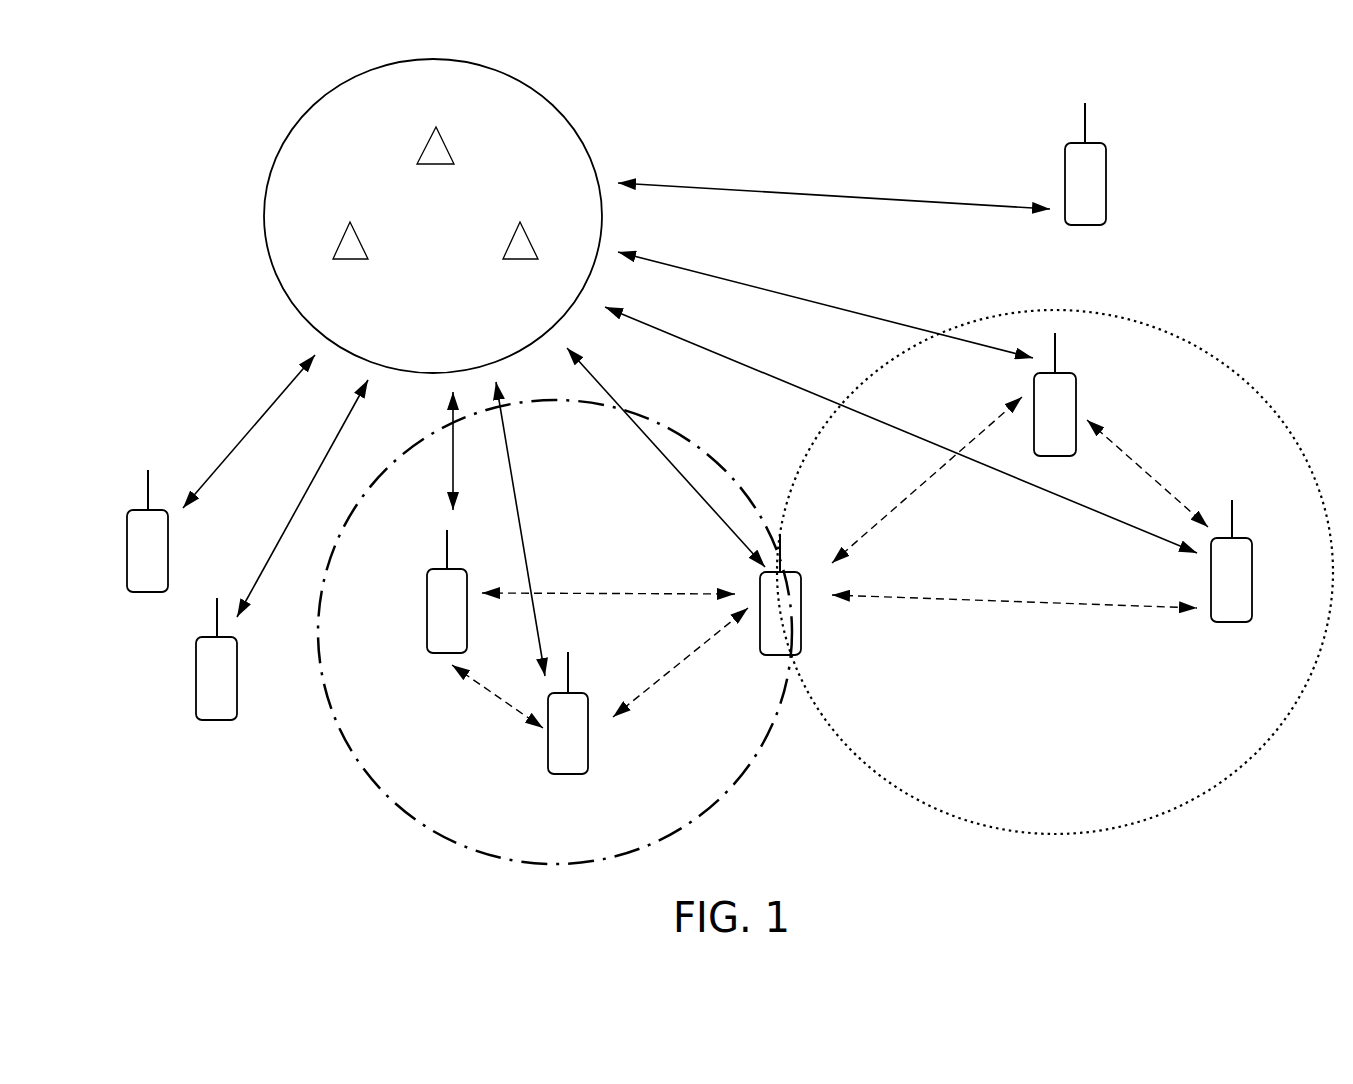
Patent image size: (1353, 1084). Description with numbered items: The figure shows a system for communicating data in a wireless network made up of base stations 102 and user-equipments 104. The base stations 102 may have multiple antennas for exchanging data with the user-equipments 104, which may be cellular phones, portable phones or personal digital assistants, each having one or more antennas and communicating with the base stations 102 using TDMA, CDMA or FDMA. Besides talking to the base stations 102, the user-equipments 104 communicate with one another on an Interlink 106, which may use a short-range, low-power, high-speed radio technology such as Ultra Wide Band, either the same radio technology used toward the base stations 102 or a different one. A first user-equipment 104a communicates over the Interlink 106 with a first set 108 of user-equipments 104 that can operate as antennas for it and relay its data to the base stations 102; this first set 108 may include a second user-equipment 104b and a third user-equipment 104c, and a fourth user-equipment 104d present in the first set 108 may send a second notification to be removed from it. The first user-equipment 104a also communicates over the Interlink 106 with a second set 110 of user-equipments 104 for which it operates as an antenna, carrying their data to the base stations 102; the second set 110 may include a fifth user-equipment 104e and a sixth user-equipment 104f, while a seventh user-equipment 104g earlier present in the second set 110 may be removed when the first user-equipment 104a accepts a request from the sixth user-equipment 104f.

The base station 102 is at (277, 273).
The user-equipment 104 is at (127, 560).
The first user-equipment 104a is at (802, 605).
The second user-equipment 104b is at (1222, 622).
The third user-equipment 104c is at (1077, 402).
The fourth user-equipment 104d is at (1065, 170).
The fifth user-equipment 104e is at (547, 758).
The sixth user-equipment 104f is at (425, 640).
The seventh user-equipment 104g is at (195, 707).
The Interlink 106 is at (593, 592).
The first set 108 is at (876, 772).
The second set 110 is at (362, 765).